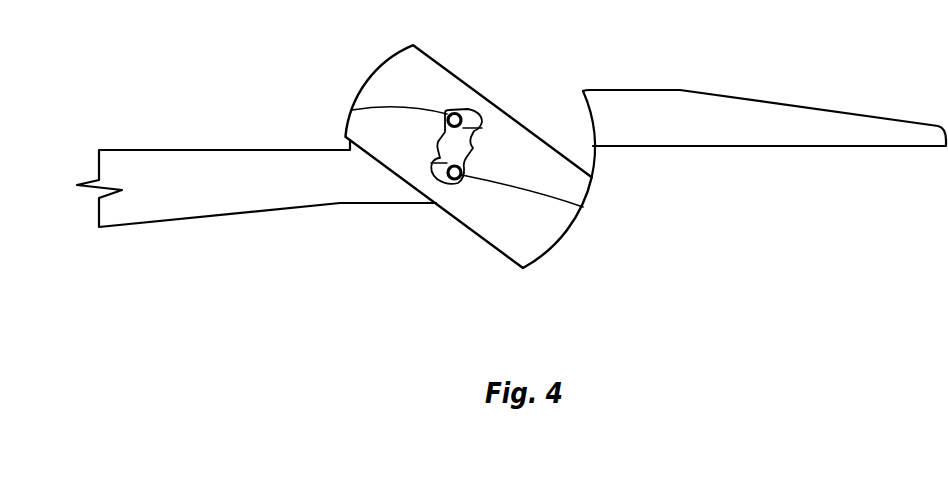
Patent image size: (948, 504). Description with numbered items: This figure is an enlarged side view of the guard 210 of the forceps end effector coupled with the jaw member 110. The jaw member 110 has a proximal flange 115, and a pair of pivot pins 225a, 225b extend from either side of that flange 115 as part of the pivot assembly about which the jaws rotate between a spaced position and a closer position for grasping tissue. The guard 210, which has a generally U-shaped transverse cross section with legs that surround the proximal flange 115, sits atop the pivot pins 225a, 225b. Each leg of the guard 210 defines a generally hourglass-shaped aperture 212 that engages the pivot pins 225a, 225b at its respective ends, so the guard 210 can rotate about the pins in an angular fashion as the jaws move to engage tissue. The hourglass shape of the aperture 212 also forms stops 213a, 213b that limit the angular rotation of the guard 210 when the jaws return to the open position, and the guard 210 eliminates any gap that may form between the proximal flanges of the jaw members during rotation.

The jaw member 110 is at (705, 132).
The proximal flange 115 is at (551, 107).
The guard 210 is at (548, 229).
The hourglass-shaped aperture 212 is at (471, 114).
The stop 213a is at (583, 207).
The stop 213b is at (352, 110).
The pivot pin 225a is at (455, 180).
The pivot pin 225b is at (454, 113).